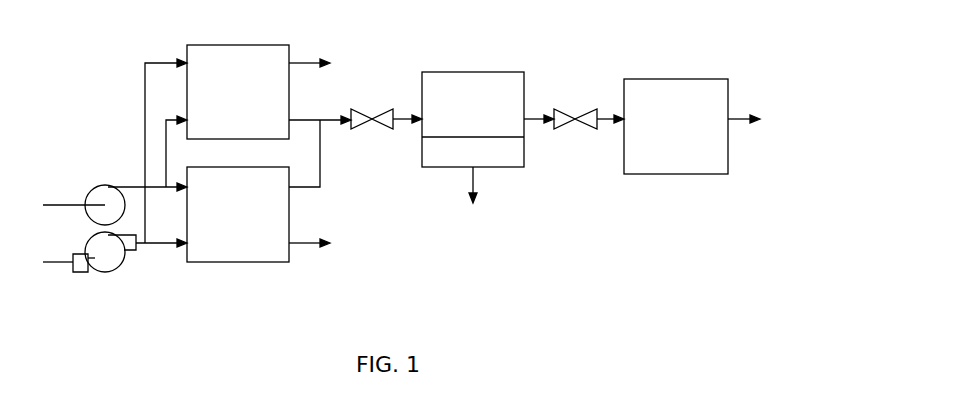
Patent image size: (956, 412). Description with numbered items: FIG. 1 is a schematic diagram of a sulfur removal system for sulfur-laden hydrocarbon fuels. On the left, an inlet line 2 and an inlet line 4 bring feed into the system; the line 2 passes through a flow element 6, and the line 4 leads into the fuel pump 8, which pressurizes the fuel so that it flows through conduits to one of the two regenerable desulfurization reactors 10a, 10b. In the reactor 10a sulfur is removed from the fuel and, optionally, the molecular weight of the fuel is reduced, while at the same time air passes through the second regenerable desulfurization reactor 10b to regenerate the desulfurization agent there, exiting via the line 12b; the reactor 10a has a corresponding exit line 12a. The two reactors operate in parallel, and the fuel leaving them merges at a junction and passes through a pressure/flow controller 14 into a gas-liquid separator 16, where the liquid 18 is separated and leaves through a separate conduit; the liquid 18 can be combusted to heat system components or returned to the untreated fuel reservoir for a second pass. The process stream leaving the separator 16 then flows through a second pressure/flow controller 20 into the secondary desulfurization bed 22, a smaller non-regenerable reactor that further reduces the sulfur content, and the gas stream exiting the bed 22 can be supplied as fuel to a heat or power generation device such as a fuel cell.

The first feed line 2 is at (56, 204).
The second feed line 4 is at (52, 267).
The fuel pump 6 is at (103, 195).
The pump 8 is at (102, 258).
The regenerable desulfurization reactor 10a is at (223, 60).
The second regenerable desulfurization reactor 10b is at (212, 243).
The first outlet line 12a is at (305, 63).
The line 12b is at (310, 262).
The pressure/flow controller 14 is at (372, 118).
The gas-liquid separator 16 is at (466, 85).
The liquid 18 is at (442, 155).
The pressure/flow controller 20 is at (574, 117).
The secondary desulfurization bed 22 is at (690, 90).